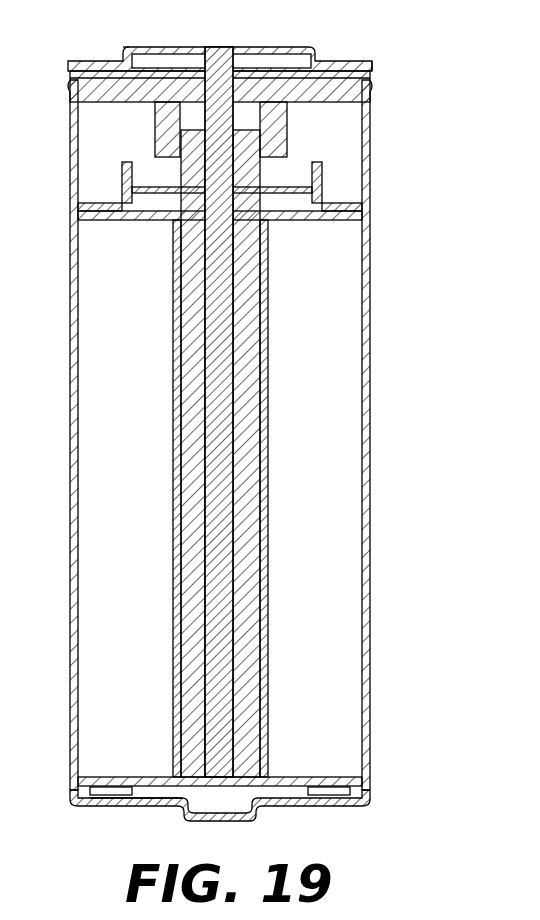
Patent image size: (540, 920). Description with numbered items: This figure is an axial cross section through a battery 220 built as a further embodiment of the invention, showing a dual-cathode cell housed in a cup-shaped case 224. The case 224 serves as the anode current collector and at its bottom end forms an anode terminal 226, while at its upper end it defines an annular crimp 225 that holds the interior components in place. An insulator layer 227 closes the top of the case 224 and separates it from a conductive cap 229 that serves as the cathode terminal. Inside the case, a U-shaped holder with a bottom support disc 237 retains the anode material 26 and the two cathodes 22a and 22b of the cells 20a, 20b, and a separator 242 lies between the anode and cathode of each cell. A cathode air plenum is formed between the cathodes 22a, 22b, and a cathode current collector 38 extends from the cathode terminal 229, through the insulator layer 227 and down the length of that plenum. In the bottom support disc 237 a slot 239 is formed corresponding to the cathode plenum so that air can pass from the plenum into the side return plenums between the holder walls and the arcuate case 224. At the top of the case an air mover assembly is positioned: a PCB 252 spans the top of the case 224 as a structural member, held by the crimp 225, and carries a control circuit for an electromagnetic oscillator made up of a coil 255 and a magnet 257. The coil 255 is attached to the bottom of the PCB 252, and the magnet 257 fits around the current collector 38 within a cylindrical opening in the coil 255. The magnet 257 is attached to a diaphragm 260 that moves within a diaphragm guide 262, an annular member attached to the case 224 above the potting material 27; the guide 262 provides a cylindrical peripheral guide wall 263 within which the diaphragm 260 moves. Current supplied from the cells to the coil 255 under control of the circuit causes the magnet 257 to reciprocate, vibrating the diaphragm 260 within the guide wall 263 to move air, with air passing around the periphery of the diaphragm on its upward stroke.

The battery 220 is at (108, 47).
The cathode current collector 38 is at (221, 73).
The conductive cap 229 is at (316, 52).
The insulator layer 227 is at (372, 70).
The annular crimp 225 is at (72, 72).
The coil 255 is at (165, 127).
The PCB 252 is at (296, 98).
The magnet 257 is at (255, 175).
The cylindrical peripheral guide wall 263 is at (120, 163).
The diaphragm guide 262 is at (106, 200).
The diaphragm 260 is at (163, 197).
The potting material 27 is at (293, 220).
The cathode 22a is at (192, 390).
The cathode 22b is at (250, 358).
The cell 20a is at (112, 462).
The cell 20b is at (334, 440).
The anode material 26 is at (97, 572).
The separator 242 is at (183, 638).
The case 224 is at (73, 750).
The bottom support disc 237 is at (132, 800).
The slot 239 is at (223, 760).
The anode terminal 226 is at (237, 814).